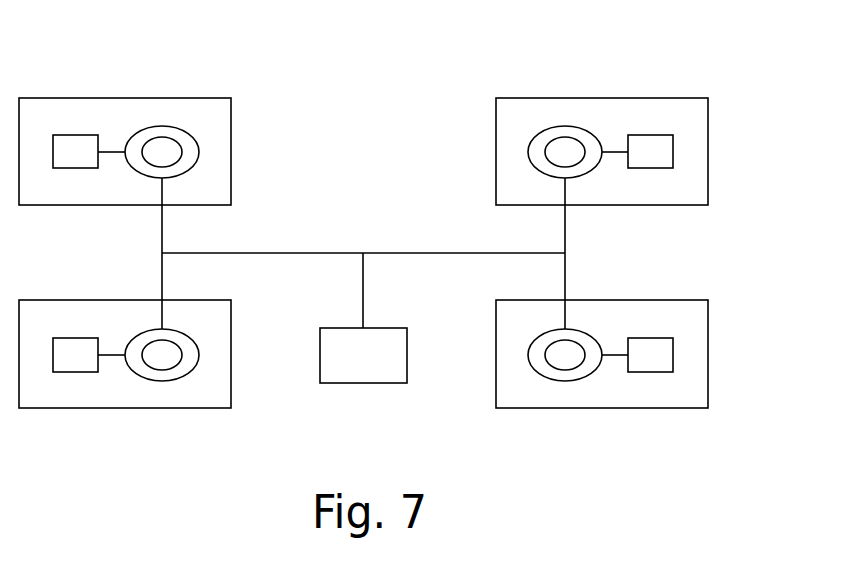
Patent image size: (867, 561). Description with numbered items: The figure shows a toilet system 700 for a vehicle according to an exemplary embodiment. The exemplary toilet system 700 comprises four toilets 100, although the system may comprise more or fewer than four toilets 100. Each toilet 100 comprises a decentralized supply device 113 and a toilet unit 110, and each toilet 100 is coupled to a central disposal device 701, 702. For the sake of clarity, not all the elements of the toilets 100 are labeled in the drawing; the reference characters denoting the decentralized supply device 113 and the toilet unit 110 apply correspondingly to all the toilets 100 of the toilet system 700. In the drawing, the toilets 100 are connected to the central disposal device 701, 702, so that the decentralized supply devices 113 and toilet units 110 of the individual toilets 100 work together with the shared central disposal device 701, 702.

The toilet 100 is at (231, 115).
The toilet unit 110 is at (167, 127).
The decentralized supply device 113 is at (77, 135).
The toilet system 700 is at (732, 143).
The central disposal device 701 is at (352, 383).
The central disposal device 702 is at (310, 253).